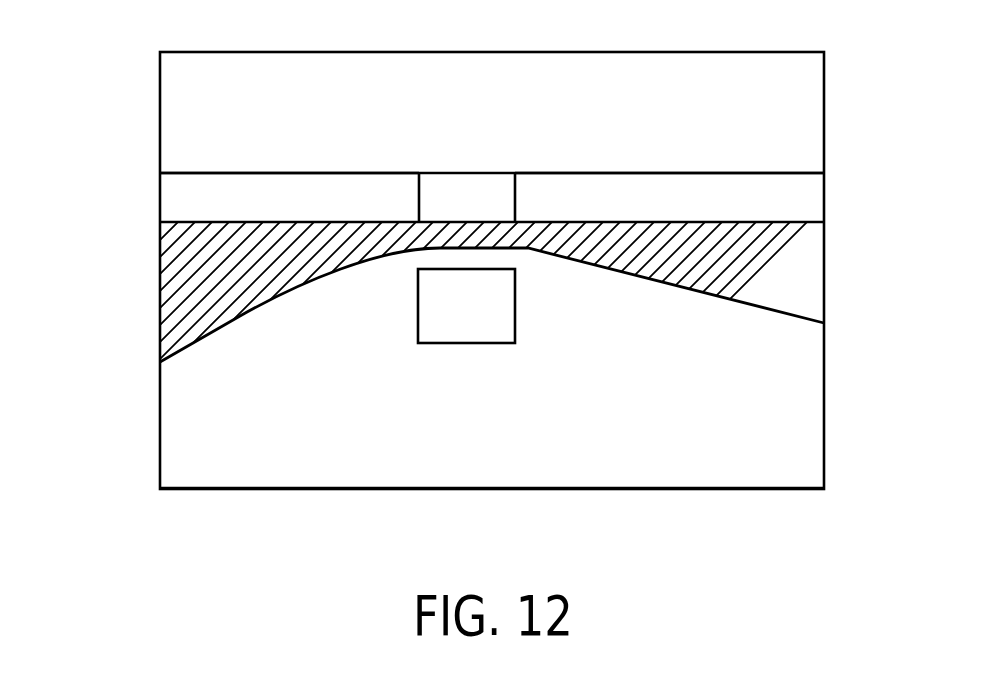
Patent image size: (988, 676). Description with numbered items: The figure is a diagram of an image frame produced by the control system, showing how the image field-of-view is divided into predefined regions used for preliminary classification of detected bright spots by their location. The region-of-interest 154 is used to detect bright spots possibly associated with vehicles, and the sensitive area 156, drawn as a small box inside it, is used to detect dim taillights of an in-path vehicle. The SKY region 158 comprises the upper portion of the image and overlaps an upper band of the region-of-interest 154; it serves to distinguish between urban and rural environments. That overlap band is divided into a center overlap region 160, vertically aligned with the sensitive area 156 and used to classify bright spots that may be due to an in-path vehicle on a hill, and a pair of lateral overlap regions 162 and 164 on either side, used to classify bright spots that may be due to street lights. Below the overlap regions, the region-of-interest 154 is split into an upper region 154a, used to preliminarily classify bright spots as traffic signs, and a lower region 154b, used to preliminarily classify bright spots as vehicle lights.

The region-of-interest 154 is at (160, 173).
The upper region 154a is at (806, 268).
The lower region 154b is at (806, 407).
The sensitive area 156 is at (466, 343).
The SKY region 158 is at (122, 47).
The center overlap region 160 is at (463, 188).
The lateral overlap region 162 is at (329, 190).
The lateral overlap region 164 is at (625, 190).